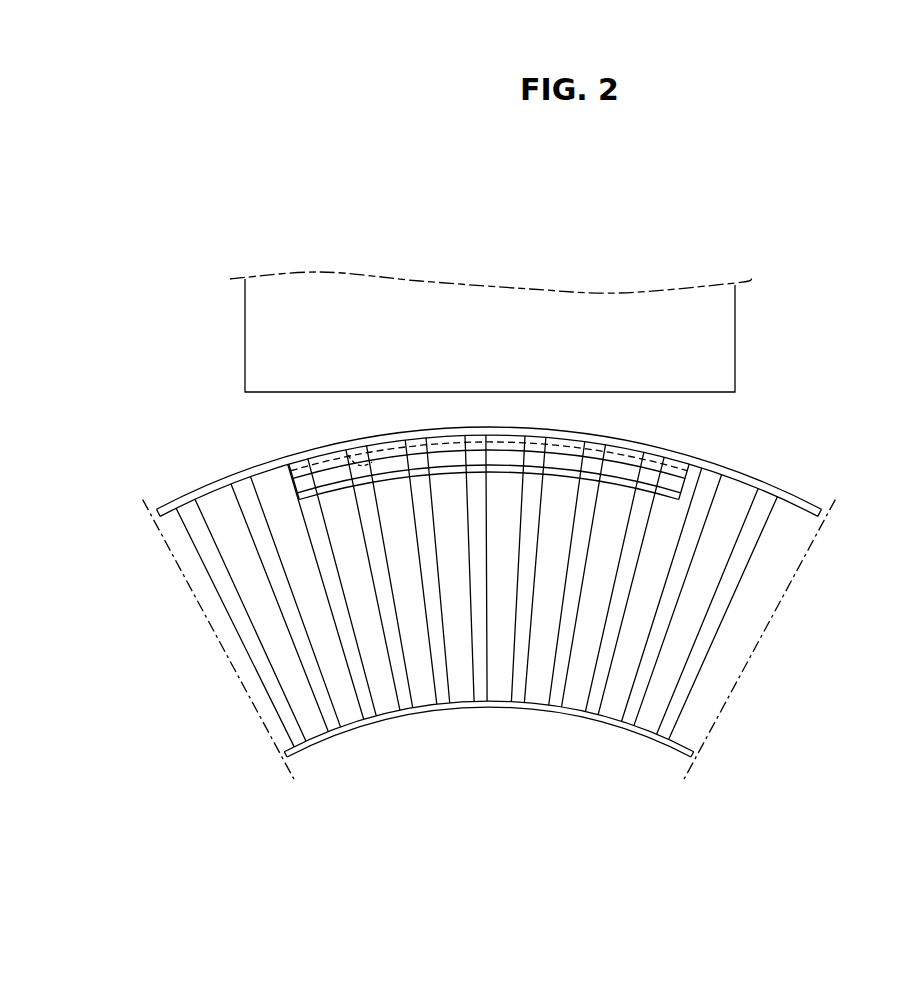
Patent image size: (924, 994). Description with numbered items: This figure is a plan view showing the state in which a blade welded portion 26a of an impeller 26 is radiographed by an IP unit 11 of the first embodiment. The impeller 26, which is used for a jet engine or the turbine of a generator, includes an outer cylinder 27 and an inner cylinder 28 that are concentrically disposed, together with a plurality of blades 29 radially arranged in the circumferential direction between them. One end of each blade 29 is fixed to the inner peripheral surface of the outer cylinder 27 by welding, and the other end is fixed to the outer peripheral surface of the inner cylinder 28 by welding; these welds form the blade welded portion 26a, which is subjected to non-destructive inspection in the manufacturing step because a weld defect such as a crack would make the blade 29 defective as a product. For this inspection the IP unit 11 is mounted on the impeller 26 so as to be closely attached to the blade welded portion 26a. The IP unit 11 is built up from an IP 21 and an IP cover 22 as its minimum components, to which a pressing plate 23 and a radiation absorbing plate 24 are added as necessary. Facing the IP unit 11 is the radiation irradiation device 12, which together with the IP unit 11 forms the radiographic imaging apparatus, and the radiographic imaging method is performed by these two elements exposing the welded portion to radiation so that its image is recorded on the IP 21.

The IP unit 11 is at (676, 460).
The radiation irradiation device 12 is at (270, 277).
The IP 21 is at (700, 474).
The IP cover 22 is at (690, 466).
The pressing plate 23 is at (700, 482).
The radiation absorbing plate 24 is at (690, 494).
The impeller 26 is at (217, 486).
The blade welded portion 26a is at (346, 452).
The outer cylinder 27 is at (180, 498).
The inner cylinder 28 is at (537, 706).
The blades 29 is at (417, 668).